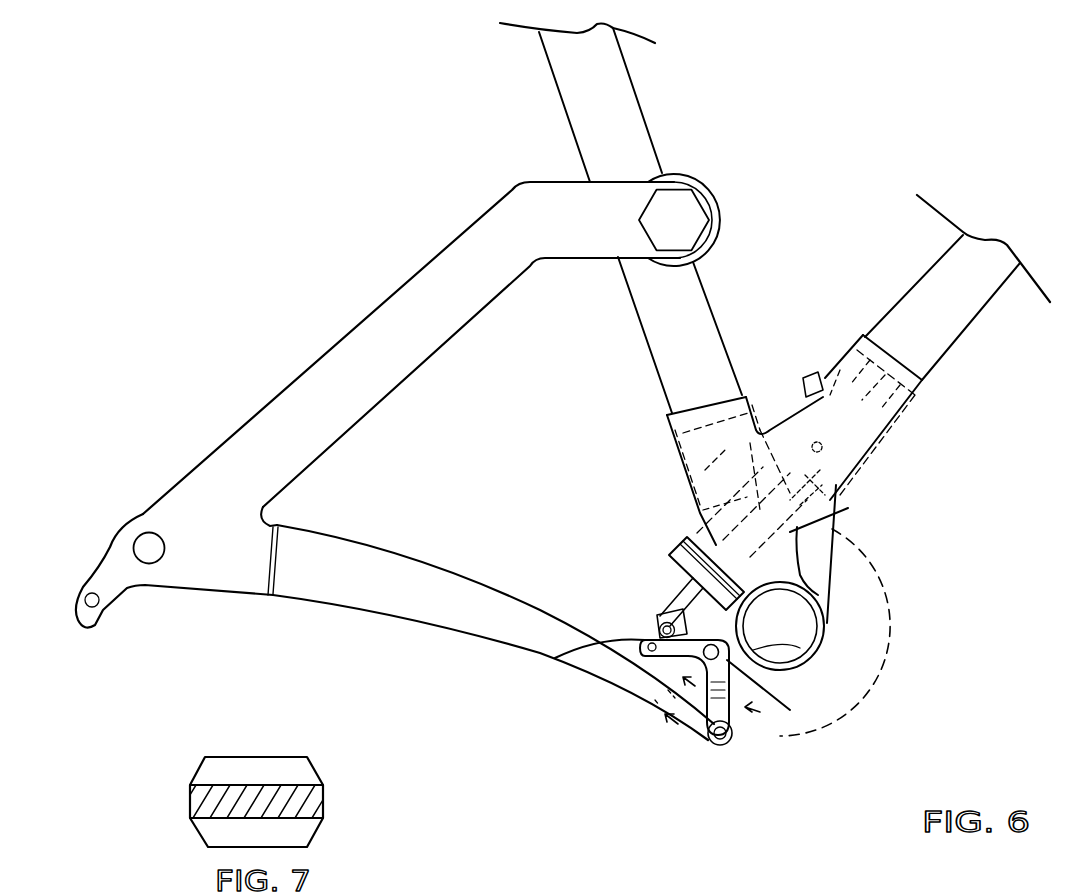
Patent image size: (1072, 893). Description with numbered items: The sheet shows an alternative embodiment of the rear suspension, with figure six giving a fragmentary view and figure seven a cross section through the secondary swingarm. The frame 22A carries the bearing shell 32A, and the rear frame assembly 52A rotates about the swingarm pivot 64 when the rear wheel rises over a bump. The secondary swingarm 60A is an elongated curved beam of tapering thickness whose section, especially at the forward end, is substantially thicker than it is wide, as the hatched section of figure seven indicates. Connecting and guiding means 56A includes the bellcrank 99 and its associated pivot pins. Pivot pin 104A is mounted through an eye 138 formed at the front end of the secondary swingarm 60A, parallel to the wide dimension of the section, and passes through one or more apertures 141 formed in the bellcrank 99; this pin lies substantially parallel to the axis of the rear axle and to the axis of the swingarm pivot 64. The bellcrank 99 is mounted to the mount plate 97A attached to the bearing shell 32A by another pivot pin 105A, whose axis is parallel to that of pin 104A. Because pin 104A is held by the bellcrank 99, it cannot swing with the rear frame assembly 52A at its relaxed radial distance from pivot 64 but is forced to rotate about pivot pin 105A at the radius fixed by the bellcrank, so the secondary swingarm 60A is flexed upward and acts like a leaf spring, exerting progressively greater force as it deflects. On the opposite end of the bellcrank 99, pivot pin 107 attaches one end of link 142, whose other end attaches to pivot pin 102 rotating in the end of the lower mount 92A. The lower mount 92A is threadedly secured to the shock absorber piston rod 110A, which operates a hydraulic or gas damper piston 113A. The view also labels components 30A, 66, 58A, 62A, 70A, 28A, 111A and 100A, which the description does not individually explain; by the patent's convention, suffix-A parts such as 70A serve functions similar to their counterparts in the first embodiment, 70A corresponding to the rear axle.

The frame 22A is at (623, 52).
The seat tube lower portion 30A is at (608, 98).
The pivot bearing ring 66 is at (728, 178).
The swingarm pivot 64 is at (677, 228).
The rear frame assembly 52A is at (452, 240).
The swing arm upper member 58A is at (363, 353).
The rear dropout 62A is at (157, 518).
The axle opening 70A is at (157, 552).
The secondary swingarm 60A is at (347, 593).
The down tube 28A is at (965, 248).
The down tube bracket 111A is at (787, 463).
The hydraulic or gas damper piston 113A is at (830, 500).
The bearing shell 32A is at (825, 620).
The shock mounting bracket 100A is at (700, 531).
The shock absorber piston rod 110A is at (675, 558).
The lower mount 92A is at (660, 612).
The link 142 is at (663, 628).
The pivot pin 102 is at (560, 657).
The pivot pin 107 is at (640, 700).
The apertures 141 is at (708, 738).
The eye 138 is at (717, 760).
The pivot pin 104A is at (733, 743).
The connecting and guiding means 56A is at (777, 723).
The bellcrank 99 is at (807, 723).
The mount plate 97A is at (720, 653).
The pivot pin 105A is at (765, 680).